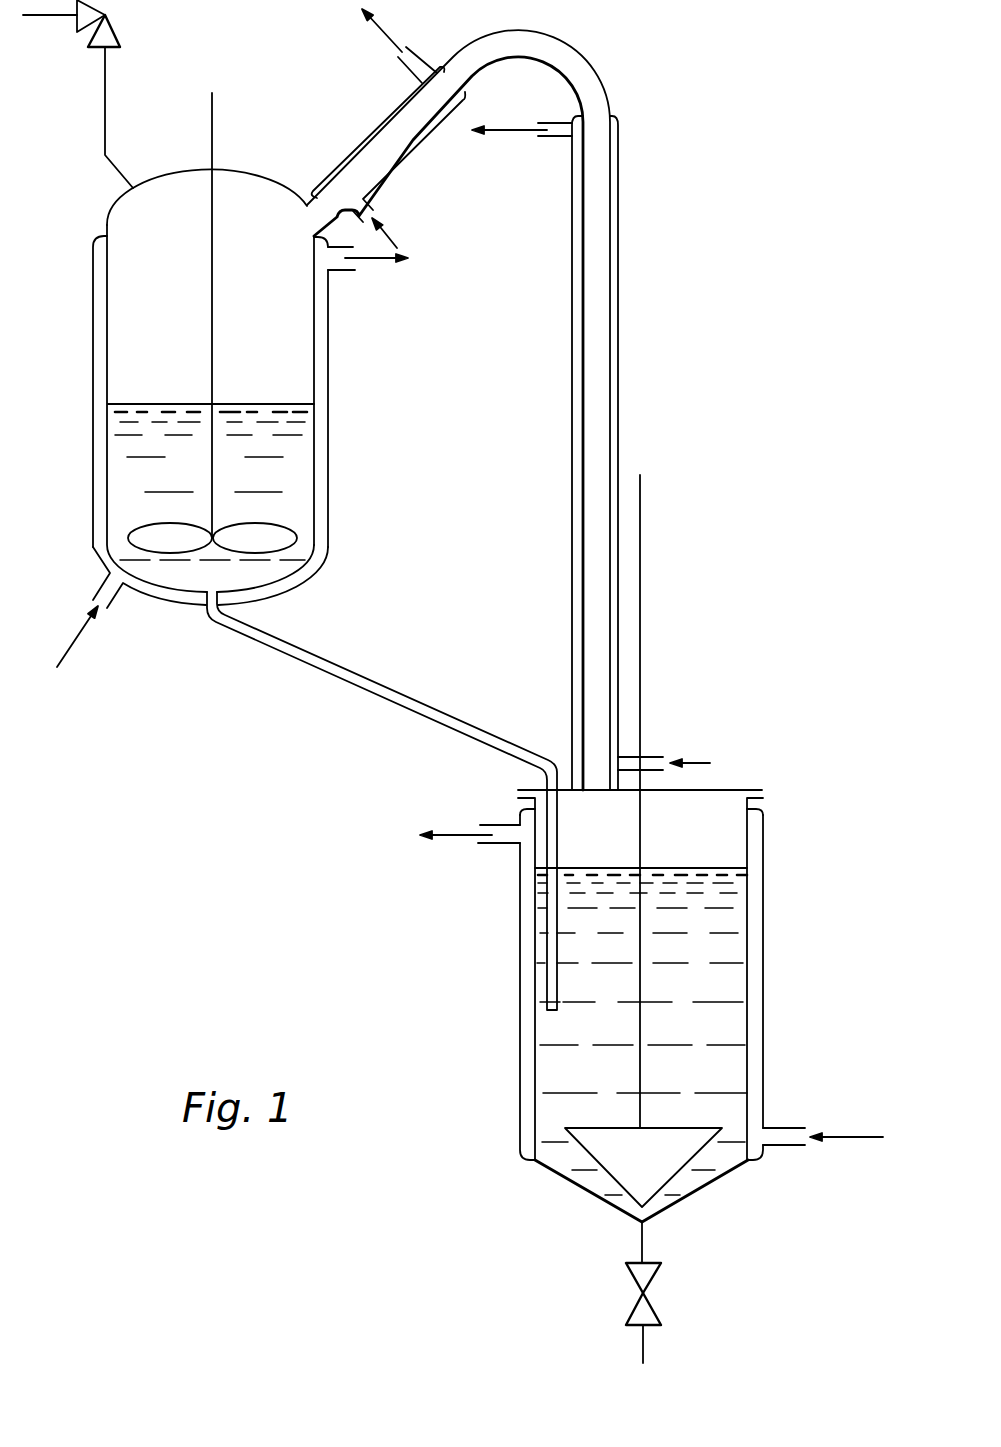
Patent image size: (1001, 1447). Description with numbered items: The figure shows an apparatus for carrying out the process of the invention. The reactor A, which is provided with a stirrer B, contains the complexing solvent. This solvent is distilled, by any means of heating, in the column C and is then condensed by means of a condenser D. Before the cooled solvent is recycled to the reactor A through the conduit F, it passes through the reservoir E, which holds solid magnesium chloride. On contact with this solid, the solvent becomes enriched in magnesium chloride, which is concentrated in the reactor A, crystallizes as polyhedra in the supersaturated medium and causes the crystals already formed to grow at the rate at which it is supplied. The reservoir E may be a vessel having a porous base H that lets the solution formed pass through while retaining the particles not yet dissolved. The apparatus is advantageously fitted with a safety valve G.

The reactor A is at (518, 968).
The stirrer B is at (640, 567).
The column C is at (618, 332).
The condenser D is at (420, 150).
The reservoir E is at (328, 415).
The conduit F is at (393, 685).
The safety valve G is at (110, 28).
The porous base H is at (280, 558).